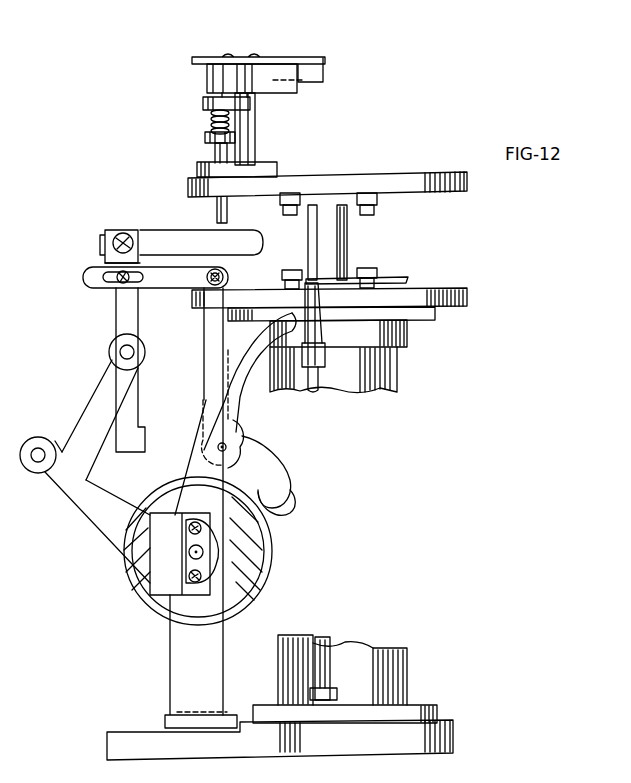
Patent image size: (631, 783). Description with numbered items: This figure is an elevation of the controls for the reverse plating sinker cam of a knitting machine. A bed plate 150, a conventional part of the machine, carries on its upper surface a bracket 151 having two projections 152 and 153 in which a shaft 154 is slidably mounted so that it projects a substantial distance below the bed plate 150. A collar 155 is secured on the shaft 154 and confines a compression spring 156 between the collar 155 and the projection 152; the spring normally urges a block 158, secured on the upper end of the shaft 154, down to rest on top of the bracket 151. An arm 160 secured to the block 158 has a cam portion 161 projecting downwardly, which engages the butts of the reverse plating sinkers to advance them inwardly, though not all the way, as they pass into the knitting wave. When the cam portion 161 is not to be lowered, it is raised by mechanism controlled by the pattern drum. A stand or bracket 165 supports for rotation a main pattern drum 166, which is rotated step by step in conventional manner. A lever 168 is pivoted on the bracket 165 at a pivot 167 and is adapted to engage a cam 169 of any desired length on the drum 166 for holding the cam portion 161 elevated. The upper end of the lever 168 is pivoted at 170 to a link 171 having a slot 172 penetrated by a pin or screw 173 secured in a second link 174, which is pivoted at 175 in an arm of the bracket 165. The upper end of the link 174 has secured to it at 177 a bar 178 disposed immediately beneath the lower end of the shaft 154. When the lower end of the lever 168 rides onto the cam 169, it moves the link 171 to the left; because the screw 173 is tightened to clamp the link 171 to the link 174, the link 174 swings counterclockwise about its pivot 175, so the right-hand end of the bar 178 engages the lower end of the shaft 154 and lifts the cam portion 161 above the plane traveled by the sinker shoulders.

The bed plate 150 is at (390, 174).
The bracket 151 is at (256, 152).
The projection 152 is at (203, 102).
The projection 153 is at (197, 170).
The shaft 154 is at (215, 152).
The collar 155 is at (205, 137).
The compression spring 156 is at (210, 119).
The block 158 is at (208, 71).
The arm 160 is at (278, 57).
The cam portion 161 is at (324, 78).
The stand or bracket 165 is at (170, 655).
The main pattern drum 166 is at (272, 576).
The pivot 167 is at (226, 446).
The lever 168 is at (274, 472).
The cam 169 is at (287, 498).
The pivot 170 is at (224, 277).
The link 171 is at (191, 290).
The slot 172 is at (144, 277).
The pin or screw 173 is at (119, 286).
The link 174 is at (115, 318).
The pivot 175 is at (135, 352).
The fastening 177 is at (119, 236).
The bar 178 is at (167, 232).